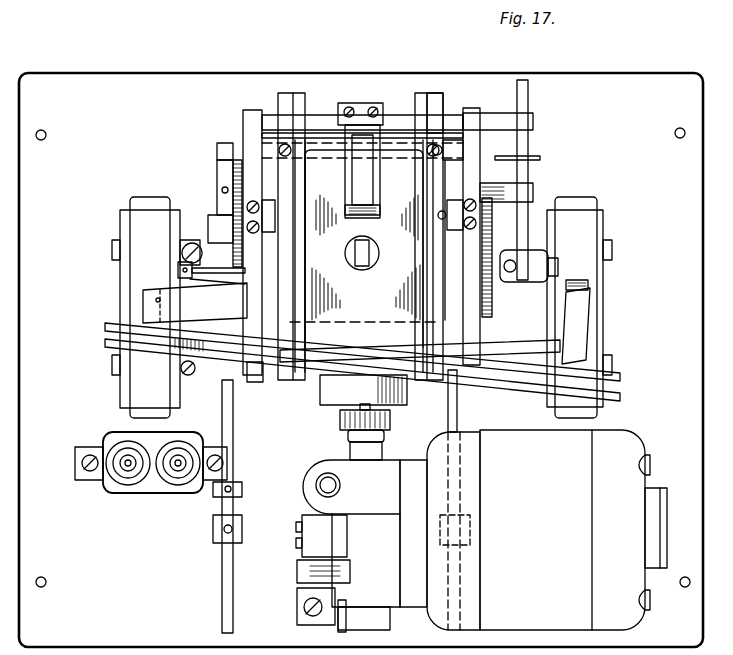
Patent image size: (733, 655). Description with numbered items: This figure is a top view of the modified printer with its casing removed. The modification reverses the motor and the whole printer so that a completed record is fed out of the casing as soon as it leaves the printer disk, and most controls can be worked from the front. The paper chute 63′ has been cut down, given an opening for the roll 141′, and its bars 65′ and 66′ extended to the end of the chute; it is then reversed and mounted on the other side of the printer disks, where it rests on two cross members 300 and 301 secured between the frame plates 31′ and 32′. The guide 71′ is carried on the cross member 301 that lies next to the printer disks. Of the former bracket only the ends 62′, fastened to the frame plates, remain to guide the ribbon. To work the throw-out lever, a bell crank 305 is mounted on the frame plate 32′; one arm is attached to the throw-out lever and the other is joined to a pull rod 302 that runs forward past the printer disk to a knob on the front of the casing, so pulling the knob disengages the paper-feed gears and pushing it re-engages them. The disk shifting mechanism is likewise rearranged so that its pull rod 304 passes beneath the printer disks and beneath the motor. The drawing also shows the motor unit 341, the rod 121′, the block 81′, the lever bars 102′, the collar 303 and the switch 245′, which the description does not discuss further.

The bar 66′ is at (290, 93).
The paper chute 63′ is at (421, 93).
The bar 65′ is at (436, 97).
The frame plate 32′ is at (252, 110).
The bell crank 305 is at (236, 148).
The frame plate 31′ is at (472, 114).
The cross member 300 is at (455, 152).
The rod 121′ is at (530, 143).
The roll 141′ is at (345, 222).
The guide 71′ is at (372, 340).
The cross member 301 is at (486, 300).
The bracket ends 62′ is at (258, 382).
The block 81′ is at (318, 380).
The pull rod 304 is at (451, 396).
The lever bars 102′ is at (498, 382).
The pull rod 302 is at (233, 428).
The collar 303 is at (242, 489).
The switch 245′ is at (297, 578).
The motor 341 is at (627, 445).